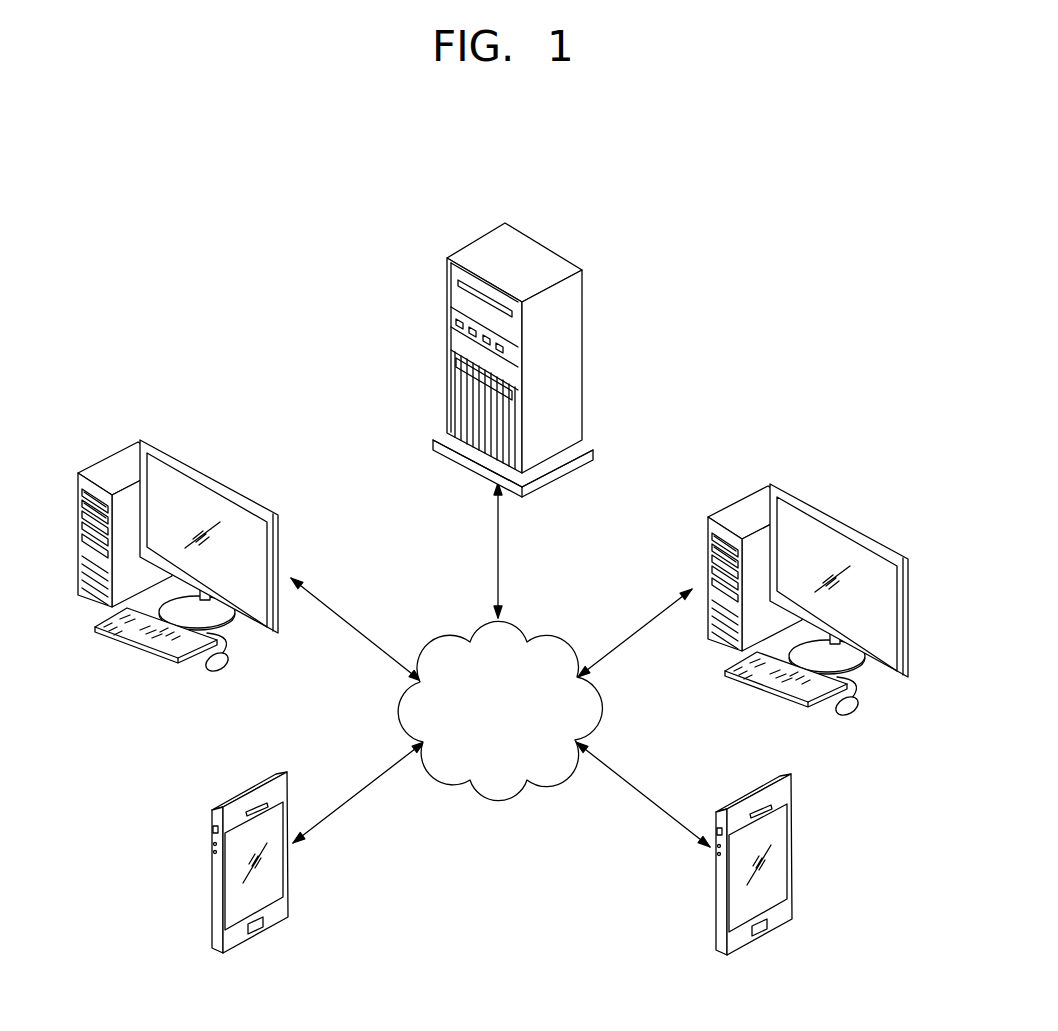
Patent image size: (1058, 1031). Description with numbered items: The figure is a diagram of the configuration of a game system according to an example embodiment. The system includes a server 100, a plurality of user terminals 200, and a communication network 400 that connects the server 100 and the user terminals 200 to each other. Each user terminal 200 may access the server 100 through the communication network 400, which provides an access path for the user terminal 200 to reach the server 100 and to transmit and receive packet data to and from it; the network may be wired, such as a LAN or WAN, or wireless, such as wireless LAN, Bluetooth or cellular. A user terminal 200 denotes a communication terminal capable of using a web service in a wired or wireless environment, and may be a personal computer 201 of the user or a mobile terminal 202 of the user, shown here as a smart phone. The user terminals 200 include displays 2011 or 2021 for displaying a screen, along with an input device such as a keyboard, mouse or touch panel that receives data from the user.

The server 100 is at (543, 246).
The communication network 400 is at (570, 640).
The user terminal 200 is at (100, 718).
The personal computer 201 is at (493, 596).
The display 2011 is at (208, 487).
The mobile terminal 202 is at (503, 838).
The display 2021 is at (278, 813).